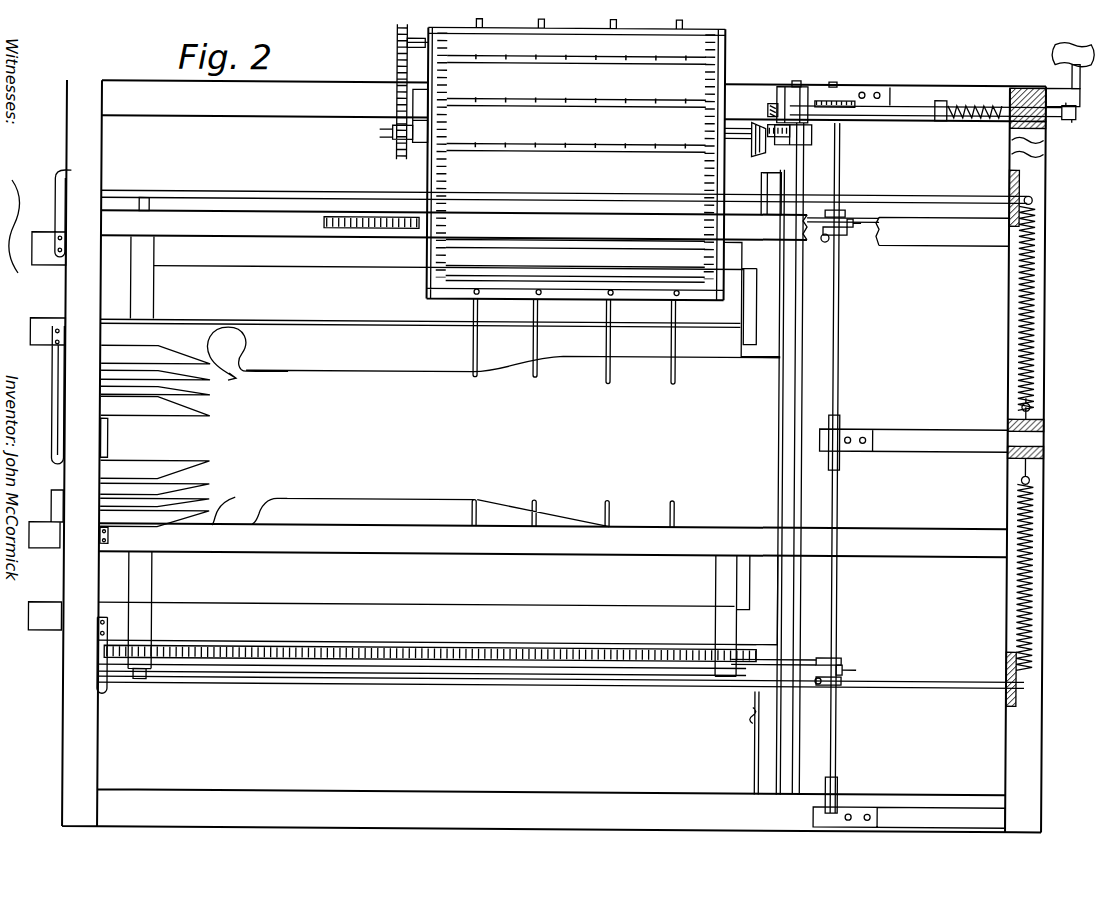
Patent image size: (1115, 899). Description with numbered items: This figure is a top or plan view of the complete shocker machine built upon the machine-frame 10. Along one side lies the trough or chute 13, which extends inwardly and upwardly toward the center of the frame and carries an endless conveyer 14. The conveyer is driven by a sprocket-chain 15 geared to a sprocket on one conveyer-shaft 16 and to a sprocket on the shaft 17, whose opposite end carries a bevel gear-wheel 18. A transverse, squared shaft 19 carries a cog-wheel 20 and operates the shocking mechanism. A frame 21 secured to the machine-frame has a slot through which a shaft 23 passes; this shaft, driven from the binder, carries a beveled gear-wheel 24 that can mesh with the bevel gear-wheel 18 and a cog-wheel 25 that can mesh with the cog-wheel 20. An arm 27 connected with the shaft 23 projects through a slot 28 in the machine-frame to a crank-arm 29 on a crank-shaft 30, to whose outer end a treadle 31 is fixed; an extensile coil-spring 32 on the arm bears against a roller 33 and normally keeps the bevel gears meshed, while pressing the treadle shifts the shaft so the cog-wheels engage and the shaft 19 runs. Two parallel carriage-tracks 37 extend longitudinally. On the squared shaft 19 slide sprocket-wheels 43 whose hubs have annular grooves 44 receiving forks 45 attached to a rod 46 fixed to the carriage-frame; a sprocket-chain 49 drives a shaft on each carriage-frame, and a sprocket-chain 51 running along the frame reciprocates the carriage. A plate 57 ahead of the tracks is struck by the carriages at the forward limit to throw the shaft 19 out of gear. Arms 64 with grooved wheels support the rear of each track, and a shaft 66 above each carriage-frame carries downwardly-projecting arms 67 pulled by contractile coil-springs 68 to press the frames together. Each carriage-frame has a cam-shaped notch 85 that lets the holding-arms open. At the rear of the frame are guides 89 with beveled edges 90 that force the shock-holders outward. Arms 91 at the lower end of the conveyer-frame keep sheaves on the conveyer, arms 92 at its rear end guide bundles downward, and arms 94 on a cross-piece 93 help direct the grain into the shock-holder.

The machine-frame 10 is at (99, 66).
The trough or chute 13 is at (726, 52).
The endless conveyer 14 is at (580, 150).
The sprocket-chain 15 is at (396, 67).
The conveyer-shaft 16 is at (419, 46).
The shaft 17 is at (396, 128).
The bevel gear-wheel 18 is at (762, 138).
The shaft 19 is at (838, 303).
The cog-wheel 20 is at (836, 101).
The frame 21 is at (808, 93).
The shaft 23 is at (796, 82).
The beveled gear-wheel 24 is at (769, 131).
The cog-wheel 25 is at (773, 110).
The arm 27 is at (805, 133).
The slot 28 is at (1008, 119).
The crank-arm 29 is at (1069, 114).
The crank-shaft 30 is at (1076, 77).
The treadle 31 is at (1078, 55).
The extensile coil-spring 32 is at (957, 103).
The roller 33 is at (940, 101).
The carriage-tracks 37 is at (553, 425).
The sprocket-wheels 43 is at (852, 219).
The annular grooves 44 is at (848, 212).
The forks 45 is at (824, 232).
The rod 46 is at (795, 313).
The sprocket-chain 49 is at (860, 668).
The sprocket-chain 51 is at (364, 228).
The plate 57 is at (796, 712).
The arms 64 is at (58, 193).
The shaft 66 is at (478, 690).
The downwardly-projecting arms 67 is at (150, 203).
The contractile coil-springs 68 is at (1044, 296).
The cam-shaped notch 85 is at (245, 342).
The guides 89 is at (156, 462).
The beveled forward edges 90 is at (200, 408).
The arms 91 is at (476, 28).
The arms 92 is at (676, 372).
The cross-piece 93 is at (712, 522).
The arms 94 is at (613, 507).